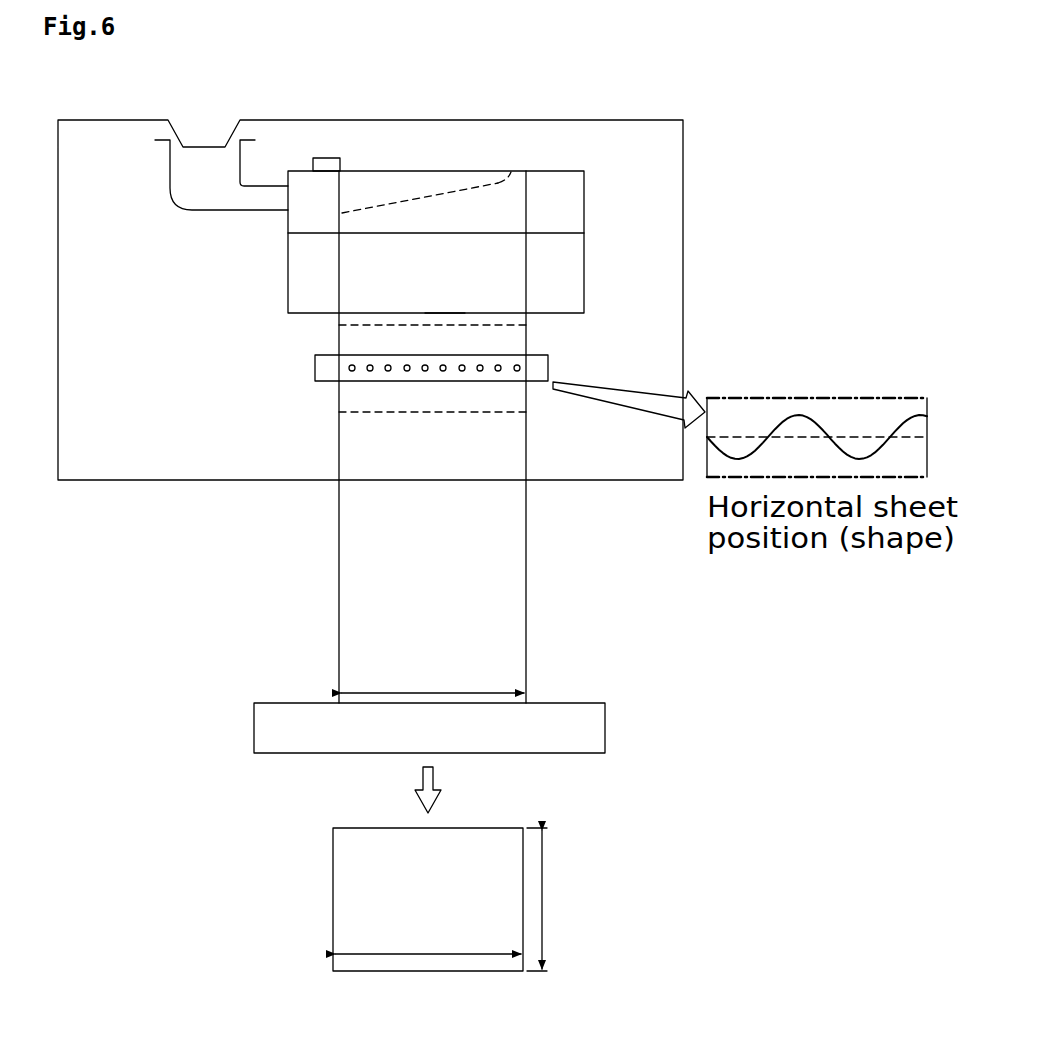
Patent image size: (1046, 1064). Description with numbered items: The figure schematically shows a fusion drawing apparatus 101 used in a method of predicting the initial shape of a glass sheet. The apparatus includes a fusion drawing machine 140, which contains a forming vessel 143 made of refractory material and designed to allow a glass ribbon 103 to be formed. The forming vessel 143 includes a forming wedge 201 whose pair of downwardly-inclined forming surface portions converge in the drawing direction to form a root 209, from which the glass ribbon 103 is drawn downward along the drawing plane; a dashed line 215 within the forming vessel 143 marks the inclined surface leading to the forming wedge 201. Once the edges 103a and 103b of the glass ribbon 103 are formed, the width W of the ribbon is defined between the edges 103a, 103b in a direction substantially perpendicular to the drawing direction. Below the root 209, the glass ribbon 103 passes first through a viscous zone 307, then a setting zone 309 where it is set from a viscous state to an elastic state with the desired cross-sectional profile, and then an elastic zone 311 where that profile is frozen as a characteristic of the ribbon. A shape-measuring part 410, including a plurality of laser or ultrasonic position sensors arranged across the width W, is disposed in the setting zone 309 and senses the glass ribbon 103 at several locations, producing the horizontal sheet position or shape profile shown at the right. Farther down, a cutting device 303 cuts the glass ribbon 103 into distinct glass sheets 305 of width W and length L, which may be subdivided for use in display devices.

The fusion drawing apparatus 101 is at (434, 299).
The fusion drawing machine 140 is at (683, 138).
The forming vessel 143 is at (595, 157).
The forming wedge 201 is at (515, 164).
The conveying path 215 is at (426, 195).
The root 209 is at (431, 313).
The viscous zone 307 is at (290, 313).
The setting zone 309 is at (425, 371).
The shape-measuring part 410 is at (548, 368).
The elastic zone 311 is at (287, 699).
The glass ribbon 103 is at (390, 437).
The edge 103a is at (335, 600).
The edge 103b is at (527, 548).
The cutting device 303 is at (623, 731).
The glass sheet 305 is at (503, 828).